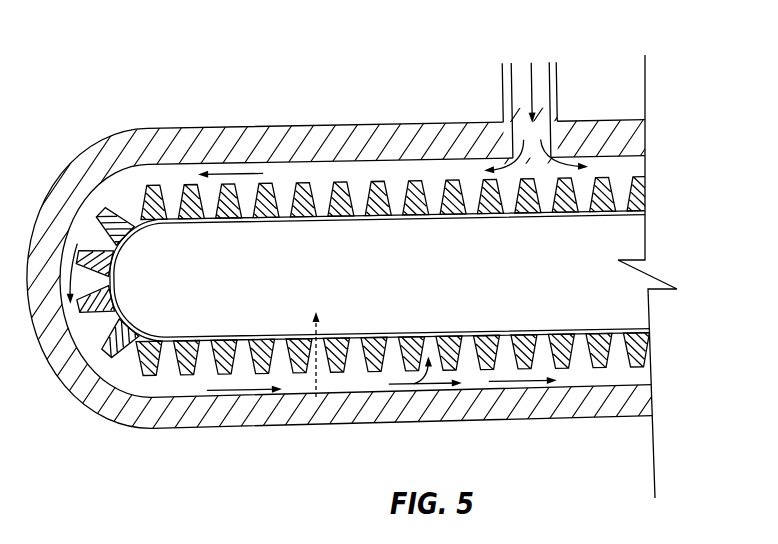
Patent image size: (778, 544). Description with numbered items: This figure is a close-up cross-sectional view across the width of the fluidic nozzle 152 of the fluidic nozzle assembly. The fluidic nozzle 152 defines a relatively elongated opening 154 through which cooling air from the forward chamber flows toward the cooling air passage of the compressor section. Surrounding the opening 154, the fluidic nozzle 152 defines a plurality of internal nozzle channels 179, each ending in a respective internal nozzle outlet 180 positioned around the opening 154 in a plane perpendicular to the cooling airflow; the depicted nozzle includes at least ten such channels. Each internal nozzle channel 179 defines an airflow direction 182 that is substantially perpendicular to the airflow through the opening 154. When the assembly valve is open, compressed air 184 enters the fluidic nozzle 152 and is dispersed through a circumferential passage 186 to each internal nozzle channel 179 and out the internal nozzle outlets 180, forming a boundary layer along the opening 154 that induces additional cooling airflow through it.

The fluidic nozzle 152 is at (232, 126).
The opening 154 is at (478, 289).
The internal nozzle channels 179 is at (290, 197).
The internal nozzle outlets 180 is at (282, 230).
The airflow direction 182 is at (310, 378).
The compressed air 184 is at (533, 83).
The circumferential passage 186 is at (153, 175).